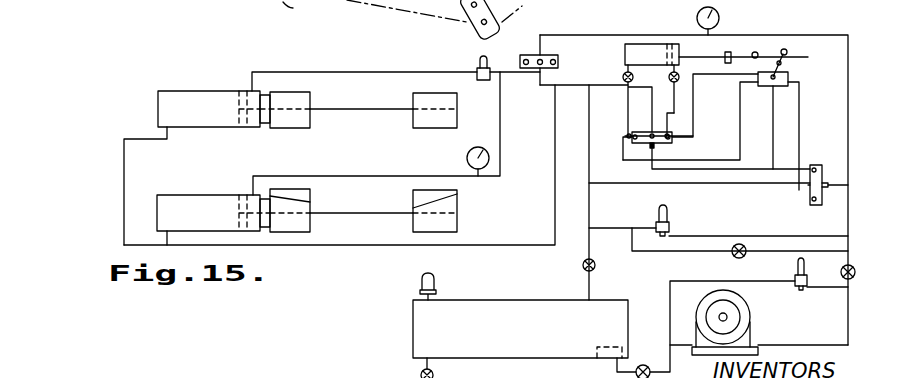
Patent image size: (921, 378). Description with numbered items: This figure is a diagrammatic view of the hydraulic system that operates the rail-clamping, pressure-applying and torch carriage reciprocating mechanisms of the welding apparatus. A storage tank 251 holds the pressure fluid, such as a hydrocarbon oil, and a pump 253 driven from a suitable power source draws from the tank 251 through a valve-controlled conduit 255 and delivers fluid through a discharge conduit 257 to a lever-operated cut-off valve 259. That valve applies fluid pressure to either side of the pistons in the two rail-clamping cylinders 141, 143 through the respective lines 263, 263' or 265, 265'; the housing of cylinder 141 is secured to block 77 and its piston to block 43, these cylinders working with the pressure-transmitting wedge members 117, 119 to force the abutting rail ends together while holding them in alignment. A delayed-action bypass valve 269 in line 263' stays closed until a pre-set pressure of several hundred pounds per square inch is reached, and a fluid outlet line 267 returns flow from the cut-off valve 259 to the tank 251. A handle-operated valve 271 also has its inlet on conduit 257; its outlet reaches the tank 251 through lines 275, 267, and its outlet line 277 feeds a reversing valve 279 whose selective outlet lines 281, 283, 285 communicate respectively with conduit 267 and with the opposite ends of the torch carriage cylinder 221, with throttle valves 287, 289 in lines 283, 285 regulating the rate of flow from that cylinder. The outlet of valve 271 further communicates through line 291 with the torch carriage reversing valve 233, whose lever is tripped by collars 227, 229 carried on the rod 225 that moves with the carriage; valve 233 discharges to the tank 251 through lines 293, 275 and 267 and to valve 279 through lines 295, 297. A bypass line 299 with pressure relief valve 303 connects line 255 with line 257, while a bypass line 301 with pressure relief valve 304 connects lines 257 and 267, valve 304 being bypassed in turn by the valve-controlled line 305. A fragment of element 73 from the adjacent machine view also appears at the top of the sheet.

The link member 73 is at (402, 20).
The fluid-pressure operated cylinder 141 is at (197, 83).
The fluid-pressure operated cylinder 143 is at (207, 186).
The block 77 is at (289, 118).
The block 43 is at (455, 101).
The pressure-transmitting wedge member 117 is at (413, 195).
The pressure-transmitting wedge member 119 is at (413, 212).
The line 263 is at (376, 133).
The line 263' is at (364, 69).
The line 265 is at (339, 178).
The line 265' is at (124, 187).
The delayed-action bypass valve 269 is at (477, 68).
The cut-off valve 259 is at (536, 72).
The fluid outlet line 267 is at (589, 118).
The outlet line 283 is at (608, 86).
The throttle valve 287 is at (626, 70).
The fluid-pressure operated cylinder 221 is at (664, 30).
The throttle valve 289 is at (651, 77).
The outlet line 285 is at (677, 97).
The collar 227 is at (730, 51).
The metal rod 225 is at (743, 32).
The collar 229 is at (786, 50).
The hydraulic pressure-reversing valve 233 is at (788, 78).
The line 291 is at (774, 103).
The line 293 is at (799, 141).
The valve 271 is at (822, 158).
The line 295 is at (718, 74).
The line 297 is at (738, 128).
The outlet line 281 is at (655, 108).
The outlet line 277 is at (718, 158).
The reversing valve 279 is at (646, 148).
The line 275 is at (735, 183).
The pressure relief valve 304 is at (658, 212).
The bypass line 301 is at (720, 238).
The valve-controlled line 305 is at (758, 248).
The bypass line 299 is at (670, 286).
The pressure relief valve 303 is at (799, 258).
The valve-controlled conduit 255 is at (634, 364).
The pump 253 is at (741, 321).
The discharge conduit 257 is at (848, 310).
The storage tank 251 is at (575, 355).